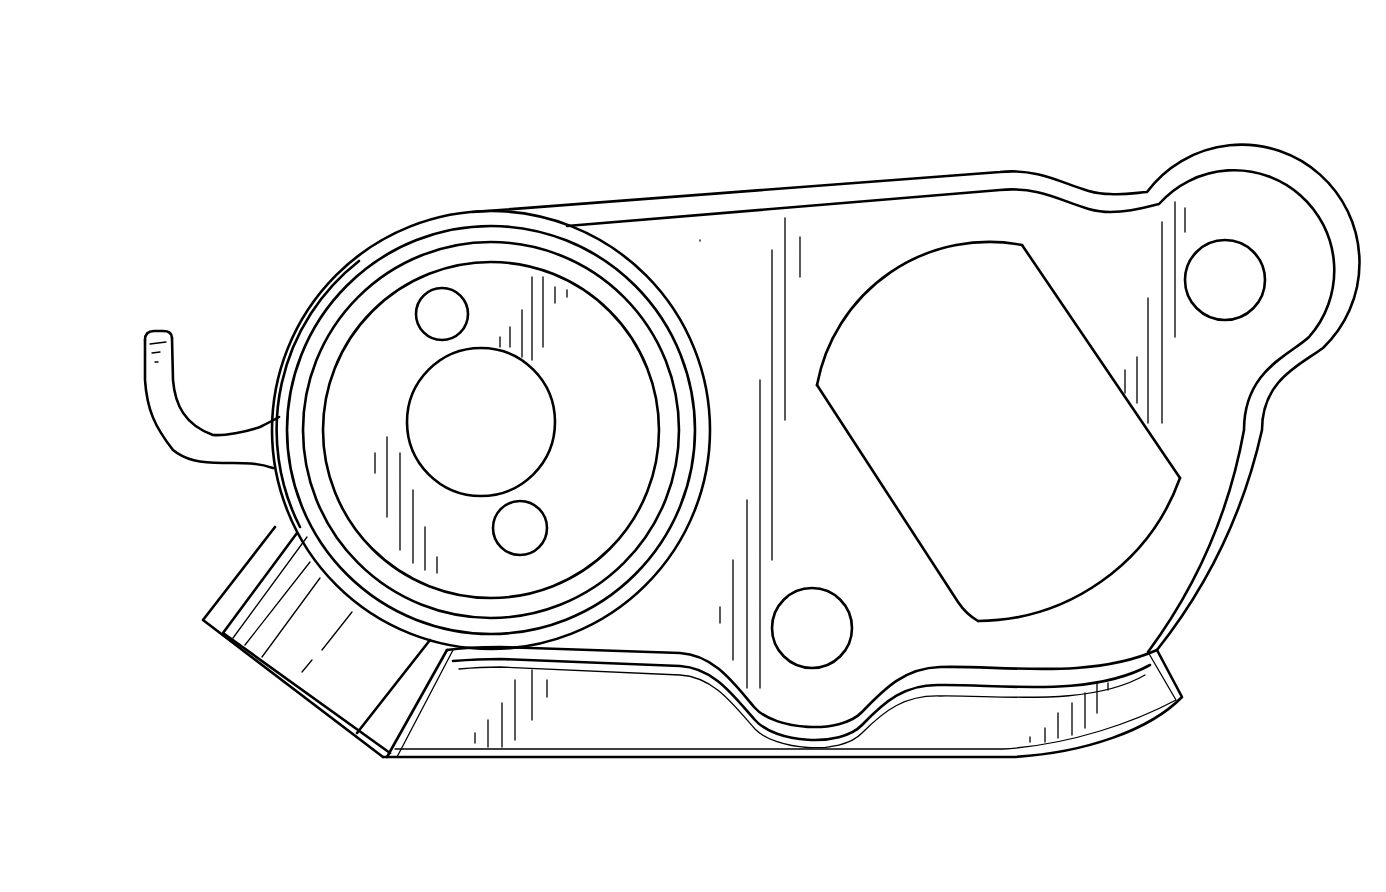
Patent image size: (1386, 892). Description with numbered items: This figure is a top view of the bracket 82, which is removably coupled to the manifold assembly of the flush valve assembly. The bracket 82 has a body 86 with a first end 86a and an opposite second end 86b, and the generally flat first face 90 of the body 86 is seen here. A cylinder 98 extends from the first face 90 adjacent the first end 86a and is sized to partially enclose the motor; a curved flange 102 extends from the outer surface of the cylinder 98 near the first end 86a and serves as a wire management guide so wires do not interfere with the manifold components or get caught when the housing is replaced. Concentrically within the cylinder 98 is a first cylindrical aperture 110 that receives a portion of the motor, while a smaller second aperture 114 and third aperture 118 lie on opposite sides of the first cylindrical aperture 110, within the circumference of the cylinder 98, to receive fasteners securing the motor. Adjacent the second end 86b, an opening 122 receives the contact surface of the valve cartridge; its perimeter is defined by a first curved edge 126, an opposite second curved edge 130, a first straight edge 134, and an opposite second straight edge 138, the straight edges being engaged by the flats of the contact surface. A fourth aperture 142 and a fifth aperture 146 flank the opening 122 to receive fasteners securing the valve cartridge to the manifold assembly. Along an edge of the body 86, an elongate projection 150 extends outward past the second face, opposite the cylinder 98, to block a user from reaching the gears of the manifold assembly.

The bracket 82 is at (874, 100).
The body 86 is at (655, 245).
The first end 86a is at (128, 432).
The second end 86b is at (1340, 362).
The first face 90 is at (742, 243).
The cylinder 98 is at (362, 263).
The flange 102 is at (155, 335).
The first cylindrical aperture 110 is at (410, 432).
The second aperture 114 is at (482, 288).
The third aperture 118 is at (555, 533).
The opening 122 is at (983, 235).
The first curved edge 126 is at (878, 293).
The second curved edge 130 is at (1107, 585).
The first straight edge 134 is at (882, 478).
The second straight edge 138 is at (1097, 353).
The fourth aperture 142 is at (832, 590).
The fifth aperture 146 is at (1230, 240).
The elongate projection 150 is at (550, 757).